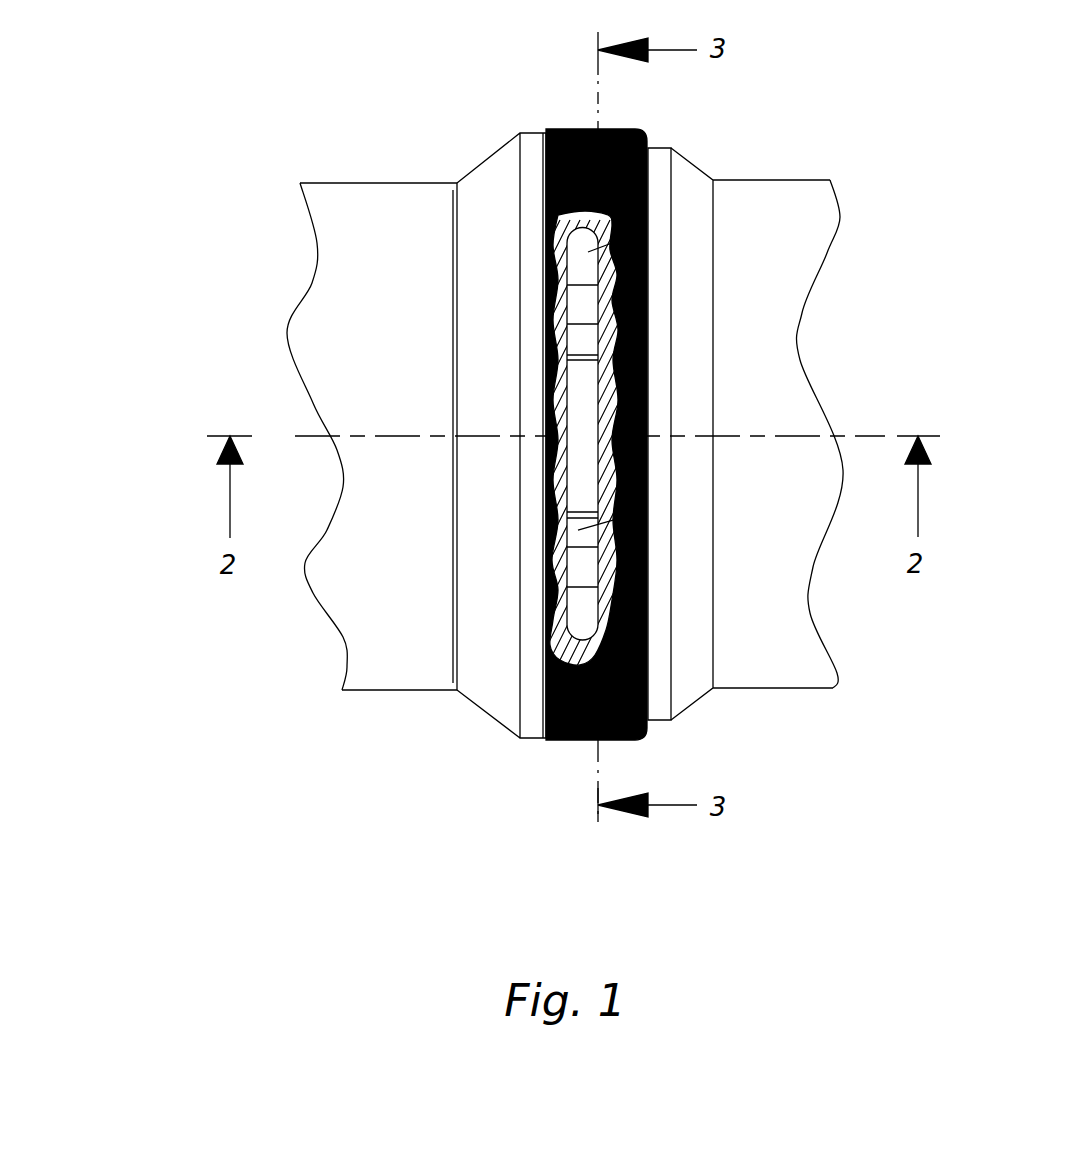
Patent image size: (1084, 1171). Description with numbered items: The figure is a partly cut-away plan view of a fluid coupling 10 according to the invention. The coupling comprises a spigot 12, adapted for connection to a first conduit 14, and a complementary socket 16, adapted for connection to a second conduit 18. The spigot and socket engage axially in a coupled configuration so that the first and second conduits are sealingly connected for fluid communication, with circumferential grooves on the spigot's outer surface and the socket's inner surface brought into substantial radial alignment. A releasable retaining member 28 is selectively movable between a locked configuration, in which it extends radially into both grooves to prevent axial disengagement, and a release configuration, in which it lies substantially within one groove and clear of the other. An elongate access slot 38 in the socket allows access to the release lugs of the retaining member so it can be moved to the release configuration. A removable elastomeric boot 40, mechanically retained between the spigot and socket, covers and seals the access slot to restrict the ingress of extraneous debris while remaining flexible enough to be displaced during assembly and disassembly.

The fluid coupling 10 is at (207, 122).
The spigot 12 is at (693, 182).
The first conduit 14 is at (777, 295).
The socket 16 is at (483, 177).
The second conduit 18 is at (347, 295).
The releasable retaining member 28 is at (578, 530).
The elongate access slot 38 is at (588, 252).
The removable elastomeric boot 40 is at (640, 133).